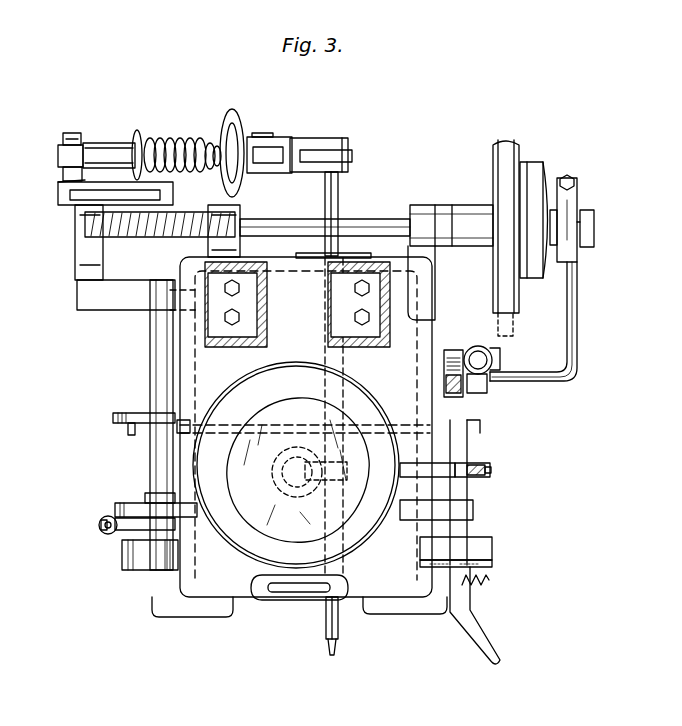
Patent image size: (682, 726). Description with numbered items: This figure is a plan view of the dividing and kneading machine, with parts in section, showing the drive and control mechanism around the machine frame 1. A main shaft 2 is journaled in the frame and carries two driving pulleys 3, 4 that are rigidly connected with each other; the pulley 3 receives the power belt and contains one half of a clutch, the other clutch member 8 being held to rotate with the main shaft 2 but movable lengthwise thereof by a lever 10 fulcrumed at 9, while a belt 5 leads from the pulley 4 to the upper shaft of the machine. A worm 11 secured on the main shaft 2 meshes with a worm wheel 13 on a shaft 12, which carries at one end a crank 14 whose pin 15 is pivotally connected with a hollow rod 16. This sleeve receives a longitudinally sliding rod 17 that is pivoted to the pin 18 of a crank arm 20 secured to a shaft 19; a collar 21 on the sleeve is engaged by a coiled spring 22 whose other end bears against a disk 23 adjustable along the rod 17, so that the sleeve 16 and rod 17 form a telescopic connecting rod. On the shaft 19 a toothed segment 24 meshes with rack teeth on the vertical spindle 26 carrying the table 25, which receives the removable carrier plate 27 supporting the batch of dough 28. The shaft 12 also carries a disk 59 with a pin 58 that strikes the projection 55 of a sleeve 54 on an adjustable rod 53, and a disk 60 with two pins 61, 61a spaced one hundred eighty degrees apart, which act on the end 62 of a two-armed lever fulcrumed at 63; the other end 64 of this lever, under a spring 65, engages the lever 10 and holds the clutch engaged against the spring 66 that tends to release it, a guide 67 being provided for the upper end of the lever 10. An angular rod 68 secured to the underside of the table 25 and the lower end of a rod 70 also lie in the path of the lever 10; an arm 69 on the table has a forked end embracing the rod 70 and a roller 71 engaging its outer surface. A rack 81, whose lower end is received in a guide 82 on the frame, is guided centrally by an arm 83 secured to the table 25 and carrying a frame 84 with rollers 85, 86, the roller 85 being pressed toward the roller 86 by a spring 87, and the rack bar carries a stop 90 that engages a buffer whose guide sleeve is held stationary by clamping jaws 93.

The machine frame 1 is at (281, 260).
The main shaft 2 is at (277, 213).
The driving pulley 3 is at (540, 168).
The driving pulley 4 is at (515, 146).
The belt 5 is at (512, 328).
The clutch member 8 is at (559, 178).
The fulcrum 9 is at (578, 203).
The lever 10 is at (571, 302).
The worm 11 is at (196, 210).
The shaft 12 is at (150, 348).
The worm wheel 13 is at (112, 240).
The crank 14 is at (70, 204).
The pin 15 is at (72, 133).
The rod 16 is at (106, 143).
The rod 17 is at (208, 142).
The pin 18 is at (262, 133).
The shaft 19 is at (339, 195).
The crank arm 20 is at (316, 143).
The collar 21 is at (139, 130).
The coiled spring 22 is at (183, 132).
The disk 23 is at (238, 112).
The toothed segment 24 is at (312, 505).
The table 25 is at (312, 345).
The vertical spindle 26 is at (284, 490).
The carrier plate 27 is at (249, 392).
The batch of dough 28 is at (307, 404).
The rod 53 is at (108, 516).
The sleeve 54 is at (101, 528).
The projection 55 is at (125, 530).
The pin 58 is at (175, 540).
The disk 59 is at (147, 496).
The disk 60 is at (128, 412).
The pin 61 is at (128, 432).
The pin 61a is at (185, 434).
The lever end 62 is at (177, 430).
The fulcrum 63 is at (292, 452).
The lever end 64 is at (478, 433).
The spring 65 is at (413, 430).
The spring 66 is at (488, 582).
The guide 67 is at (440, 566).
The rod 68 is at (474, 510).
The arm 69 is at (438, 478).
The rod 70 is at (480, 478).
The roller 71 is at (490, 470).
The rack 81 is at (446, 362).
The guide 82 is at (500, 382).
The arm 83 is at (446, 382).
The frame 84 is at (470, 350).
The roller 85 is at (444, 366).
The roller 86 is at (472, 393).
The spring 87 is at (446, 352).
The stop 90 is at (486, 388).
The clamping jaws 93 is at (497, 350).